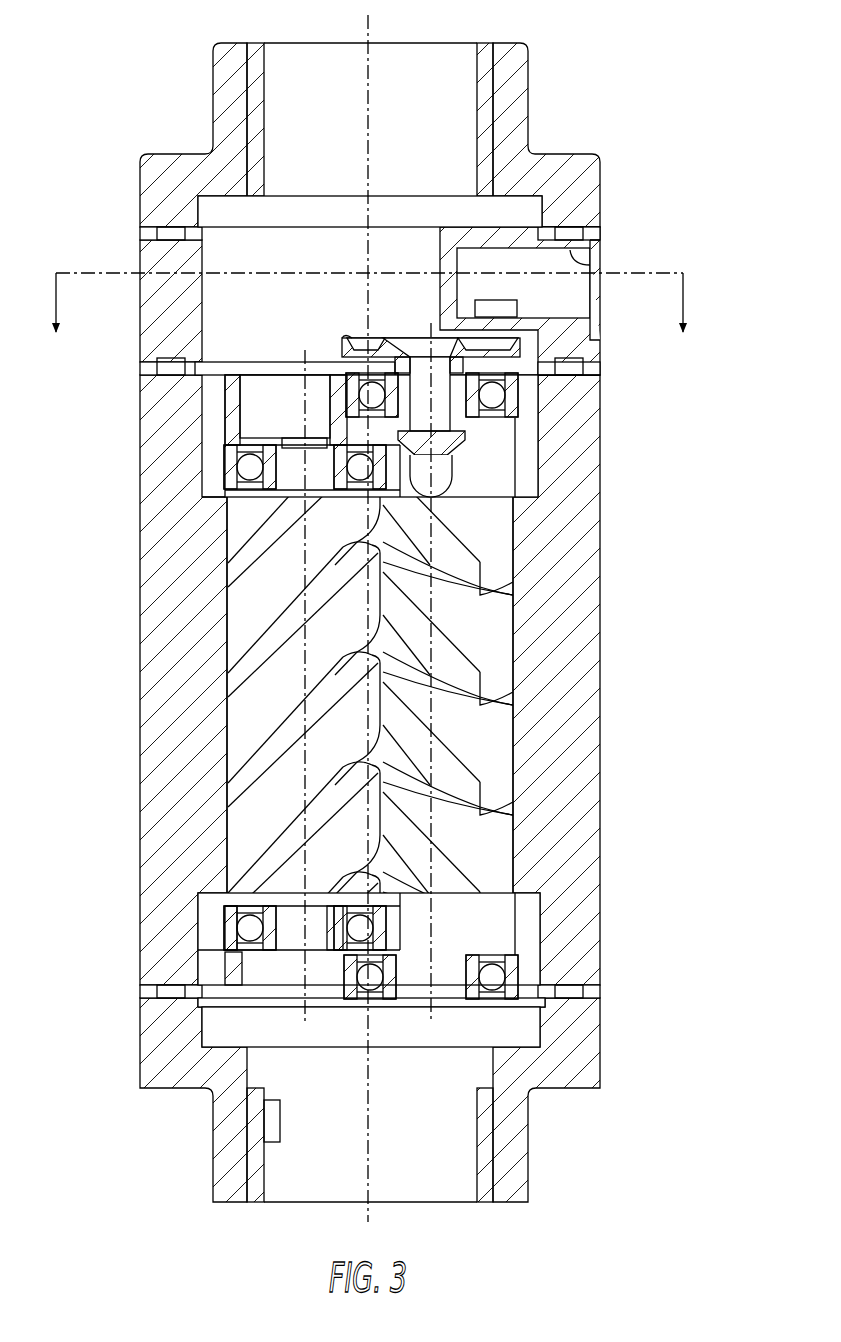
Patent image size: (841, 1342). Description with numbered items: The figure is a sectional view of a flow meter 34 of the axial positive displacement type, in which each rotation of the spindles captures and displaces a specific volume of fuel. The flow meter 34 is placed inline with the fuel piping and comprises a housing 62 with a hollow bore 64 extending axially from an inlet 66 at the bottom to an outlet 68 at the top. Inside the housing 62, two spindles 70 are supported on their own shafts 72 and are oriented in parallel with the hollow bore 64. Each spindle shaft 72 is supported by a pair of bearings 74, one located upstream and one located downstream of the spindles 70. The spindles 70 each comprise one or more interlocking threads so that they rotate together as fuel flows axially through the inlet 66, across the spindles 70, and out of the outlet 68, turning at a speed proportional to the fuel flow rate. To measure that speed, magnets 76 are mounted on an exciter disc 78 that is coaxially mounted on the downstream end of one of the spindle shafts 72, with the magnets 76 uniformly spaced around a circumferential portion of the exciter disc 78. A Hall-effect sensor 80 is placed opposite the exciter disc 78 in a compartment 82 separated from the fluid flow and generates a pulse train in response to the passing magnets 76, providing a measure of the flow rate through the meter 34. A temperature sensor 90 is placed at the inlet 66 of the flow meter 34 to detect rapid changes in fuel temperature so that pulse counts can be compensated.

The flow meter 34 is at (396, 623).
The housing 62 is at (411, 623).
The hollow bore 64 is at (230, 688).
The inlet 66 is at (303, 1198).
The outlet 68 is at (427, 50).
The spindles 70 is at (487, 597).
The shafts 72 is at (293, 460).
The bearings 74 is at (495, 397).
The magnets 76 is at (497, 340).
The exciter disc 78 is at (345, 350).
The Hall-effect sensor 80 is at (517, 305).
The compartment 82 is at (600, 262).
The temperature sensor 90 is at (270, 1122).